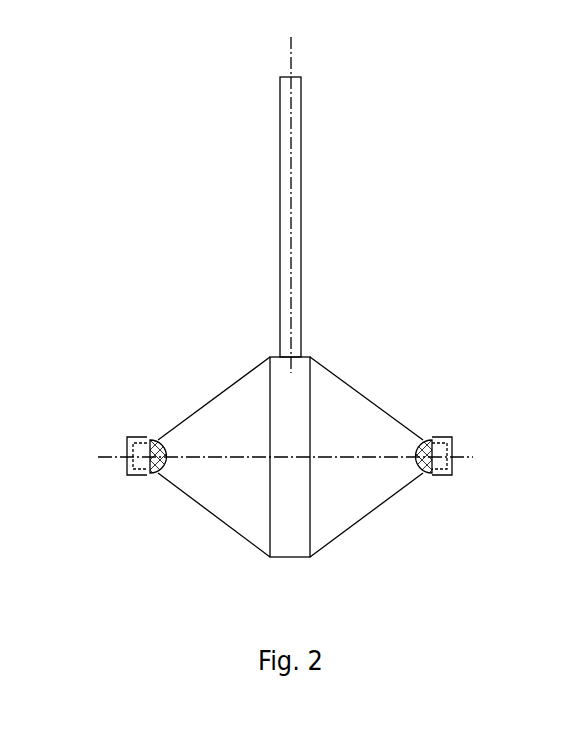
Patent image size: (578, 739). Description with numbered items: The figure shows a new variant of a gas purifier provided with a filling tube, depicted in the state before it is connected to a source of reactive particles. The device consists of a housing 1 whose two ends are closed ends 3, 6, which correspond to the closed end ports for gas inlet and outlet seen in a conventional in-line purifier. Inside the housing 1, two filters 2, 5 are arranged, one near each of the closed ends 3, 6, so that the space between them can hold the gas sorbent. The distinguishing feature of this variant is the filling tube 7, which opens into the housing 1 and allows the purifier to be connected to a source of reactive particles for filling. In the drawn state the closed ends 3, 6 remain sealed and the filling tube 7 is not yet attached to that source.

The housing 1 is at (397, 422).
The filter 2 is at (433, 450).
The closed end 3 is at (442, 477).
The filter 5 is at (158, 470).
The closed end 6 is at (127, 450).
The filling tube 7 is at (302, 173).